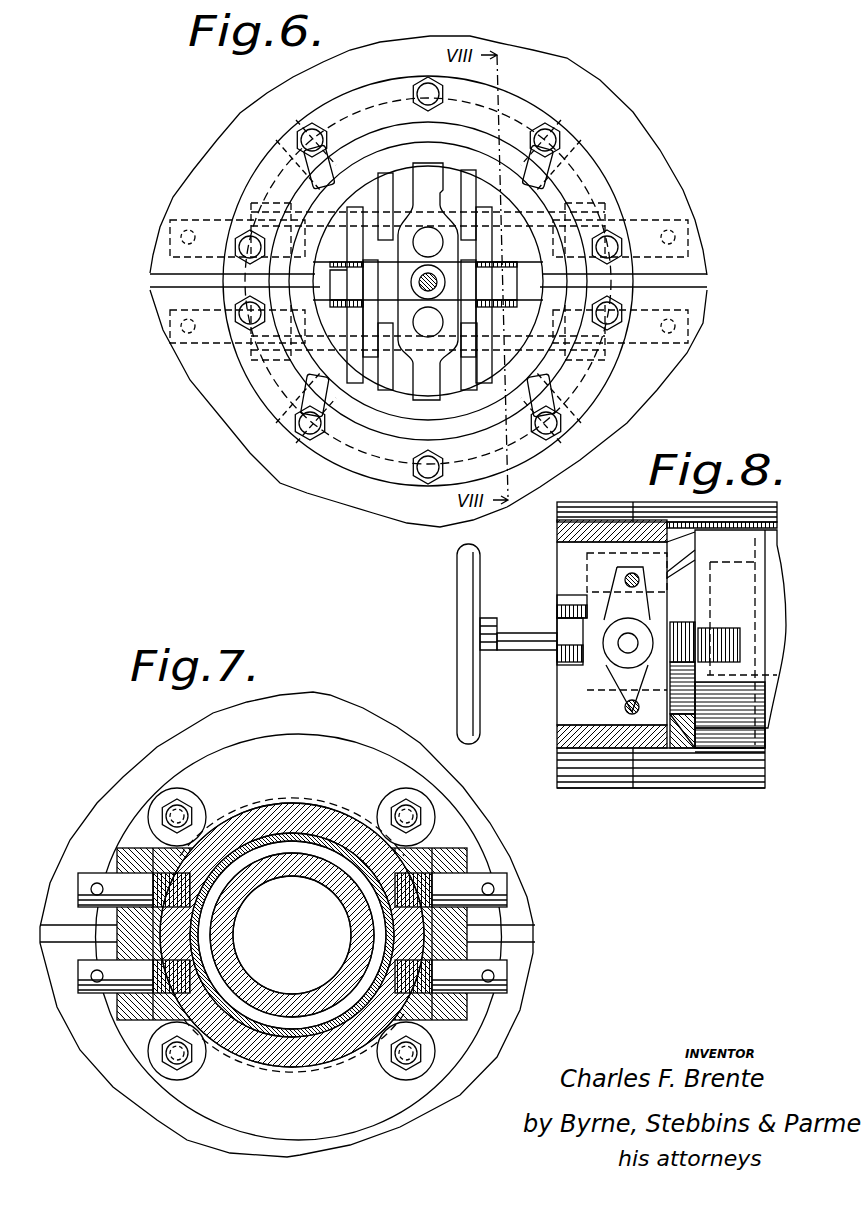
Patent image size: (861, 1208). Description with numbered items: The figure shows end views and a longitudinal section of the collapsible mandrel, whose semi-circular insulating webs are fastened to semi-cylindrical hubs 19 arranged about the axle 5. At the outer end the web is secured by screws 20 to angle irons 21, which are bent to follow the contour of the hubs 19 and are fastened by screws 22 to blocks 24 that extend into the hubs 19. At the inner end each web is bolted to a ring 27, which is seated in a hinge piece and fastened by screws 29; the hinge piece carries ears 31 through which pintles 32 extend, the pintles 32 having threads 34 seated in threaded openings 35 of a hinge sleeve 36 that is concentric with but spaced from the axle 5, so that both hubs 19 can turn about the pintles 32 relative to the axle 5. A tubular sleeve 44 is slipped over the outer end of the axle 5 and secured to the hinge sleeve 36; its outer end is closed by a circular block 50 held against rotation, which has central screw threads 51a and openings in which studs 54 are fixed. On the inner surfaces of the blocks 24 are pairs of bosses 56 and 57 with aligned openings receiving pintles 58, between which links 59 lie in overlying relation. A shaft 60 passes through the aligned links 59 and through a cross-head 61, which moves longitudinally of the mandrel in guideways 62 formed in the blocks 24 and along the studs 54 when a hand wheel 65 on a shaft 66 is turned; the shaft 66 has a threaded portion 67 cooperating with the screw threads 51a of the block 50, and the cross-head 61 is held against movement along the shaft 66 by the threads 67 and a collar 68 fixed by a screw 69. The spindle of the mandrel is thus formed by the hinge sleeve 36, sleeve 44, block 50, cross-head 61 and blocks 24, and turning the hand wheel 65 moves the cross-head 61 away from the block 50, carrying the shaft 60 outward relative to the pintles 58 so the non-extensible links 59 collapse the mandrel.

In FIG. 7, the axle 5 is at (306, 854).
In FIG. 8, the hubs 19 is at (737, 789).
In FIG. 6, the screws 20 is at (446, 97).
In FIG. 6, the angle irons 21 is at (488, 142).
In FIG. 6, the screws 22 is at (594, 157).
In FIG. 6, the blocks 24 is at (390, 150).
In FIG. 8, the blocks 24 is at (560, 531).
In FIG. 7, the ring 27 is at (210, 1099).
In FIG. 7, the screws 29 is at (169, 809).
In FIG. 7, the ears 31 is at (117, 852).
In FIG. 6, the pintles 32 is at (150, 272).
In FIG. 7, the pintles 32 is at (78, 880).
In FIG. 7, the threads 34 is at (206, 901).
In FIG. 7, the threaded openings 35 is at (194, 883).
In FIG. 7, the hinge sleeve 36 is at (269, 813).
In FIG. 8, the sleeve 44 is at (768, 742).
In FIG. 7, the sleeve 44 is at (299, 1063).
In FIG. 8, the block 50 is at (720, 736).
In FIG. 8, the screw threads 51a is at (764, 673).
In FIG. 6, the studs 54 is at (428, 282).
In FIG. 6, the bosses 56 is at (347, 246).
In FIG. 6, the bosses 57 is at (378, 224).
In FIG. 6, the pintles 58 is at (292, 197).
In FIG. 8, the pintles 58 is at (625, 578).
In FIG. 6, the links 59 is at (378, 362).
In FIG. 8, the links 59 is at (605, 698).
In FIG. 6, the shaft 60 is at (348, 297).
In FIG. 8, the shaft 60 is at (560, 656).
In FIG. 6, the cross-head 61 is at (396, 207).
In FIG. 8, the cross-head 61 is at (595, 679).
In FIG. 6, the guideways 62 is at (431, 176).
In FIG. 8, the guideways 62 is at (627, 639).
In FIG. 8, the hand wheel 65 is at (460, 602).
In FIG. 6, the shaft 66 is at (434, 276).
In FIG. 8, the shaft 66 is at (540, 622).
In FIG. 8, the threaded portion 67 is at (692, 626).
In FIG. 6, the collar 68 is at (423, 294).
In FIG. 8, the collar 68 is at (557, 629).
In FIG. 8, the screw 69 is at (560, 591).